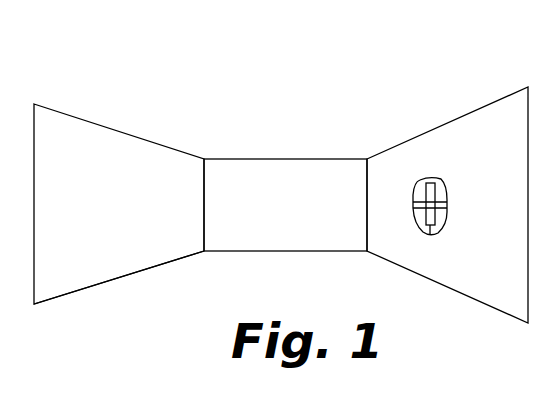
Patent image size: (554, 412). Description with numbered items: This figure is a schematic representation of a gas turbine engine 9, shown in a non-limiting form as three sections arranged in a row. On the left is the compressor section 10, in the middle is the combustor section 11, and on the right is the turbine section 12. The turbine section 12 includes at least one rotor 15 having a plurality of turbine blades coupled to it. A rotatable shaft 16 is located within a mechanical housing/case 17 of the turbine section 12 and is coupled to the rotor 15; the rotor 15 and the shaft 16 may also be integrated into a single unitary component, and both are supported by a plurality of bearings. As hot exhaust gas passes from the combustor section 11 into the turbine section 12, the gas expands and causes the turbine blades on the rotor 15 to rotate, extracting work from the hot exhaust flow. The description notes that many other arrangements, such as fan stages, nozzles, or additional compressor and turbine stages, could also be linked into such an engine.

The gas turbine engine 9 is at (381, 63).
The compressor section 10 is at (100, 135).
The combustor section 11 is at (272, 172).
The turbine section 12 is at (432, 130).
The rotor 15 is at (431, 231).
The rotatable shaft 16 is at (418, 192).
The mechanical housing/case 17 is at (61, 298).